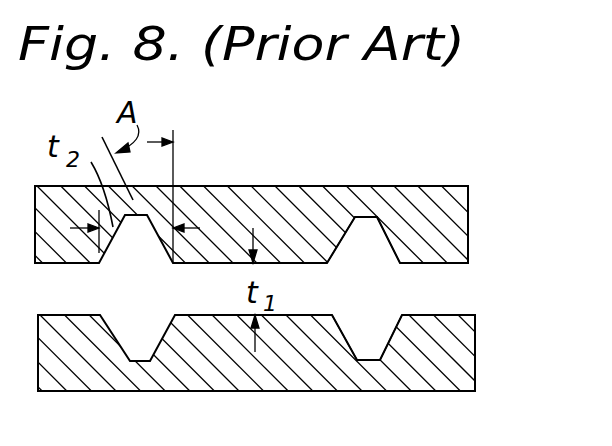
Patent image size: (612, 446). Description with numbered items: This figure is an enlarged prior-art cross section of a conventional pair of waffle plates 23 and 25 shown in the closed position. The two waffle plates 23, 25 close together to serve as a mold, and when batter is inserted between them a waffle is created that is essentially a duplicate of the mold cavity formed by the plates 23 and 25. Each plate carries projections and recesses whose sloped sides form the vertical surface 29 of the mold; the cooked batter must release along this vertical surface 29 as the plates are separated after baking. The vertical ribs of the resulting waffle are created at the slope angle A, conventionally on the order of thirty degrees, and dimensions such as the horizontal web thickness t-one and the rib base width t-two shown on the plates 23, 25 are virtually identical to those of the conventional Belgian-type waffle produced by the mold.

The waffle plate 23 is at (433, 203).
The waffle plate 25 is at (442, 368).
The vertical surface of the mold 29 is at (391, 247).